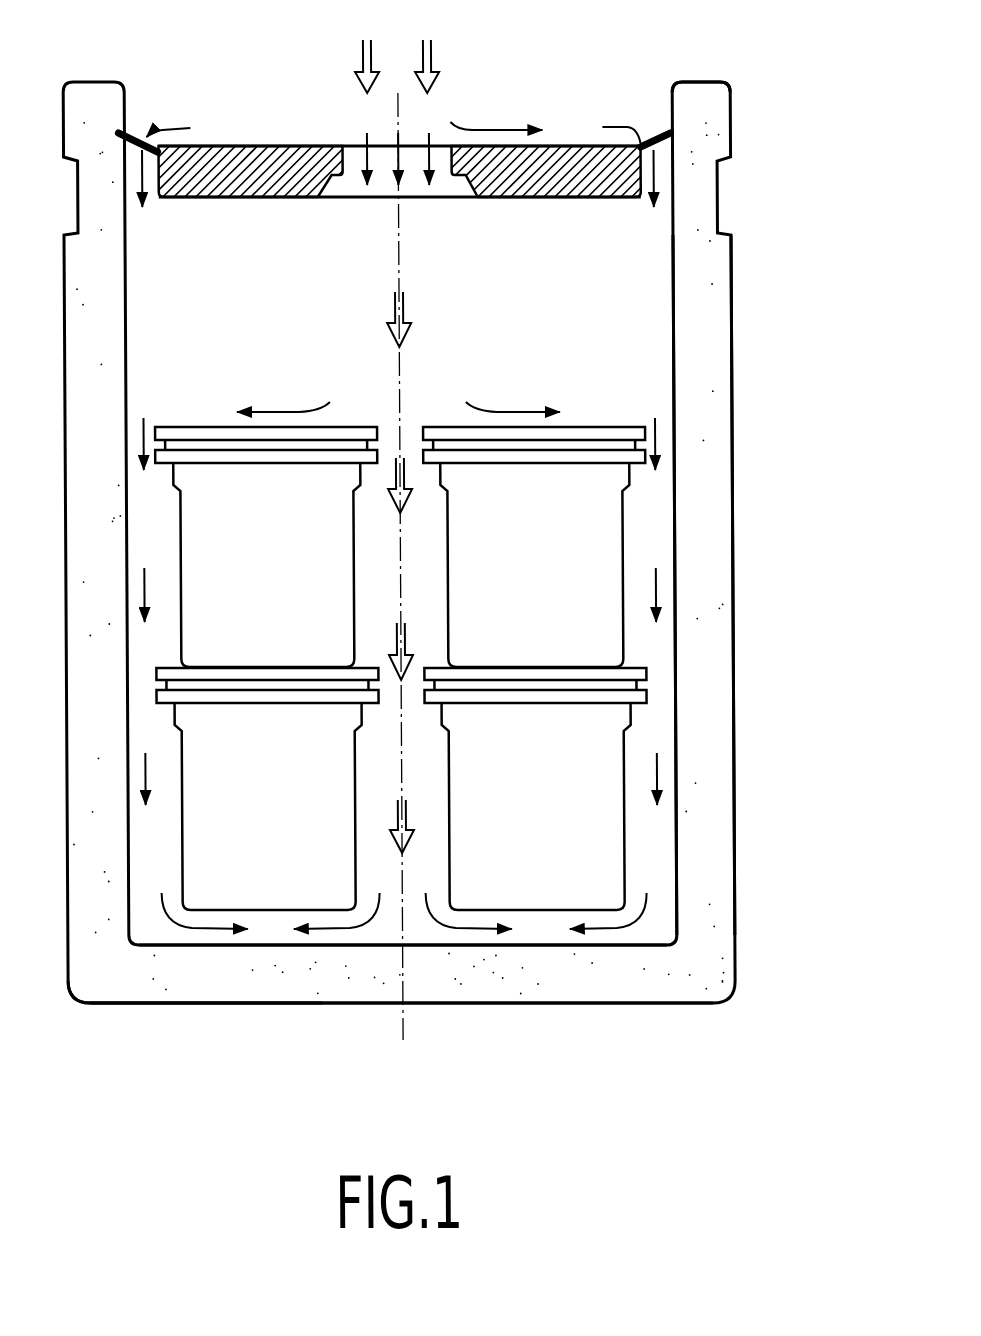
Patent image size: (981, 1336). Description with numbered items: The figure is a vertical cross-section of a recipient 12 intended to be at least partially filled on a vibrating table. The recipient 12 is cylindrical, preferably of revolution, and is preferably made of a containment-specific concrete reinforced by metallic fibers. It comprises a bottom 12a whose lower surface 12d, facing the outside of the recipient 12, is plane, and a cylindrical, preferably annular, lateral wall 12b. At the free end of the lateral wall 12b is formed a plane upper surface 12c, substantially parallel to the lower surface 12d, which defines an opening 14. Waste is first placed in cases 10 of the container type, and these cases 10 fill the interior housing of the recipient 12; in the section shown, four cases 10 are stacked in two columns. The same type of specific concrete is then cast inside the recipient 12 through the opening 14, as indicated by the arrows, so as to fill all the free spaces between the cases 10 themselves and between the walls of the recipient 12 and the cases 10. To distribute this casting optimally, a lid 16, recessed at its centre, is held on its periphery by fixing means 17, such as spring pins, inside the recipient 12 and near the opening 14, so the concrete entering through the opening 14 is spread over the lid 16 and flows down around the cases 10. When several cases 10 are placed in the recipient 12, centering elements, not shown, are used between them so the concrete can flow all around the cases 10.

The cases 10 is at (593, 548).
The recipient 12 is at (752, 687).
The bottom 12a is at (478, 980).
The lateral wall 12b is at (703, 793).
The upper surface 12c is at (703, 80).
The lower surface 12d is at (293, 1010).
The opening 14 is at (586, 113).
The lid 16 is at (252, 153).
The fixing means 17 is at (150, 137).